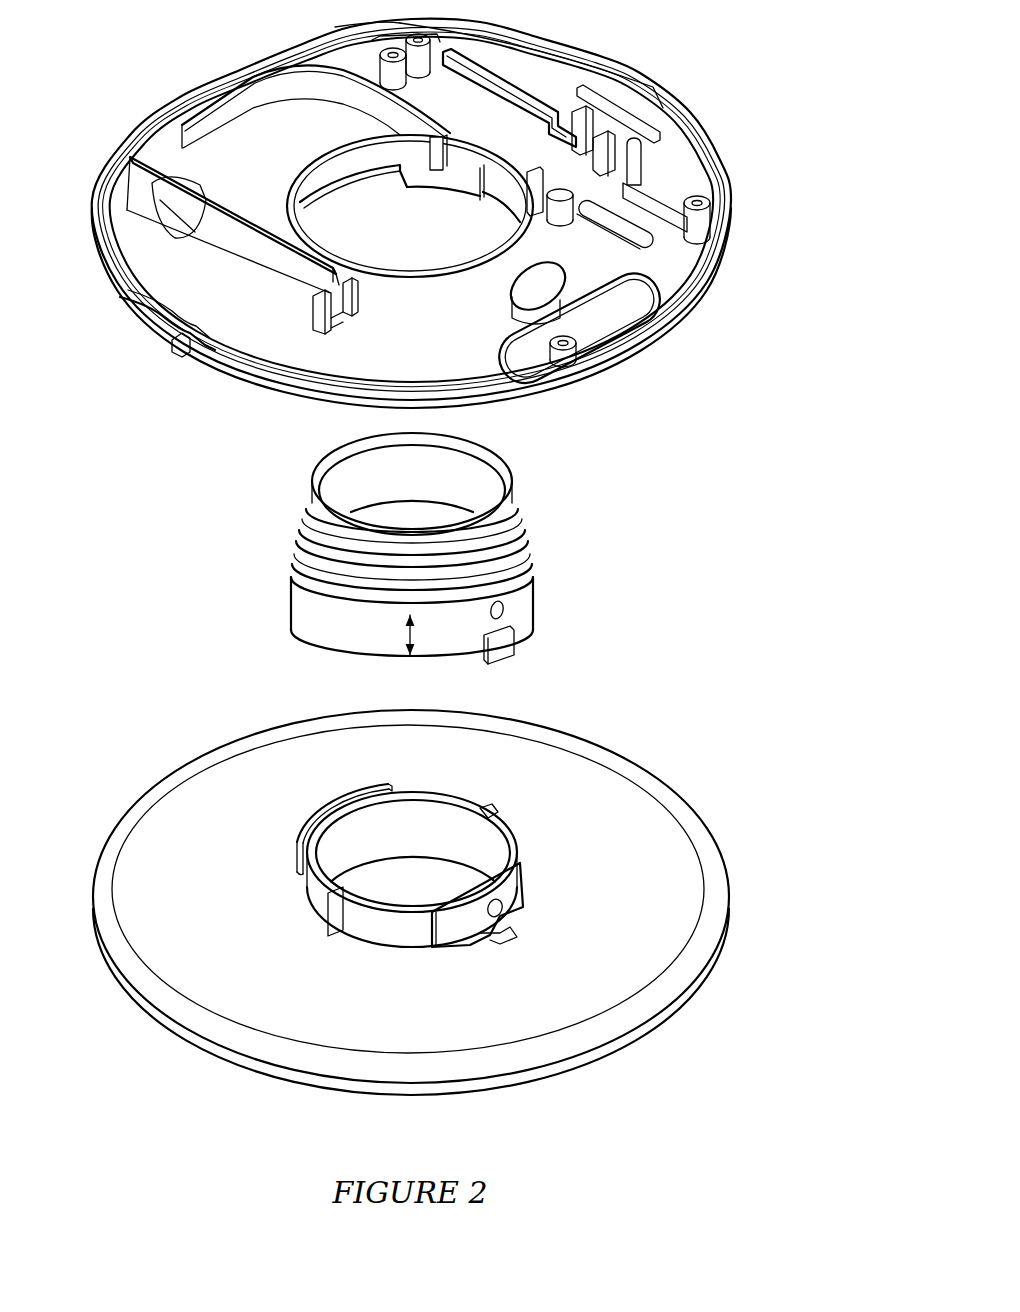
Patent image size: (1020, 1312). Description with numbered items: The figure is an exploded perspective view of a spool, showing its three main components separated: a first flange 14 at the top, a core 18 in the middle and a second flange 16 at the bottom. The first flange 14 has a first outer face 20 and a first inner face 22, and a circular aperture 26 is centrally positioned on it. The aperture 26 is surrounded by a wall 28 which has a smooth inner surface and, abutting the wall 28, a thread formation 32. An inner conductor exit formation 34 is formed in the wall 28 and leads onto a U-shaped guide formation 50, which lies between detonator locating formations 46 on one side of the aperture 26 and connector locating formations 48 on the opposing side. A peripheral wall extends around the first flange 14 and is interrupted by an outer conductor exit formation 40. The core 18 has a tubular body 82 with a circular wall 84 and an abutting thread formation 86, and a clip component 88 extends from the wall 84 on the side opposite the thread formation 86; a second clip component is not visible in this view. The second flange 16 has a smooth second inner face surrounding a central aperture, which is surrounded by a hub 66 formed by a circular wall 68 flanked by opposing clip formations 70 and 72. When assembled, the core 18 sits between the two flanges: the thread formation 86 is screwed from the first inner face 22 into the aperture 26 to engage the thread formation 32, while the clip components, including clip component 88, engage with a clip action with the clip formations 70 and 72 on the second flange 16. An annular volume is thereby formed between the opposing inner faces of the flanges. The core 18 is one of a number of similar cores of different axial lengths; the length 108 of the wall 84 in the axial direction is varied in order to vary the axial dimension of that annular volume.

The first flange 14 is at (736, 180).
The second flange 16 is at (691, 1022).
The core 18 is at (434, 567).
The first outer face 20 is at (223, 282).
The first inner face 22 is at (674, 342).
The circular aperture 26 is at (455, 212).
The wall 28 is at (411, 286).
The thread formation 32 is at (338, 199).
The inner conductor exit formation 34 is at (469, 208).
The outer conductor exit formation 40 is at (182, 346).
The detonator locating formations 46 is at (314, 300).
The connector locating formations 48 is at (603, 226).
The U-shaped guide formation 50 is at (288, 85).
The hub 66 is at (430, 903).
The circular wall 68 is at (513, 830).
The clip formation 70 is at (525, 916).
The clip formation 72 is at (327, 799).
The tubular body 82 is at (292, 557).
The circular wall 84 is at (343, 618).
The thread formation 86 is at (325, 473).
The clip component 88 is at (508, 654).
The length 108 is at (410, 636).